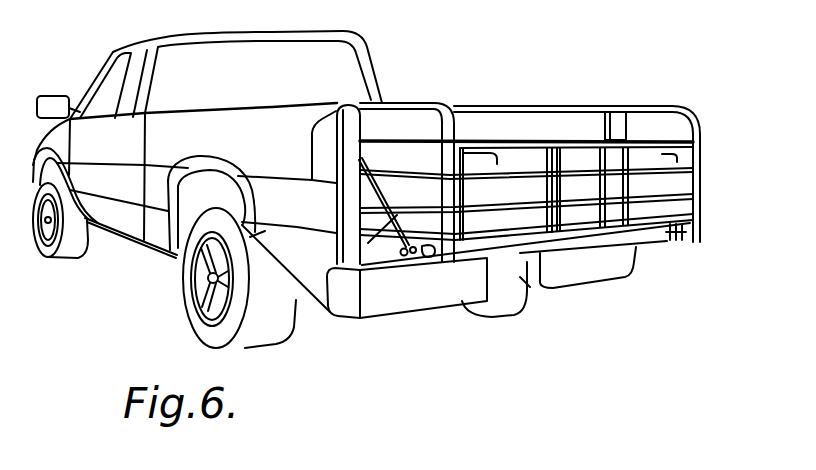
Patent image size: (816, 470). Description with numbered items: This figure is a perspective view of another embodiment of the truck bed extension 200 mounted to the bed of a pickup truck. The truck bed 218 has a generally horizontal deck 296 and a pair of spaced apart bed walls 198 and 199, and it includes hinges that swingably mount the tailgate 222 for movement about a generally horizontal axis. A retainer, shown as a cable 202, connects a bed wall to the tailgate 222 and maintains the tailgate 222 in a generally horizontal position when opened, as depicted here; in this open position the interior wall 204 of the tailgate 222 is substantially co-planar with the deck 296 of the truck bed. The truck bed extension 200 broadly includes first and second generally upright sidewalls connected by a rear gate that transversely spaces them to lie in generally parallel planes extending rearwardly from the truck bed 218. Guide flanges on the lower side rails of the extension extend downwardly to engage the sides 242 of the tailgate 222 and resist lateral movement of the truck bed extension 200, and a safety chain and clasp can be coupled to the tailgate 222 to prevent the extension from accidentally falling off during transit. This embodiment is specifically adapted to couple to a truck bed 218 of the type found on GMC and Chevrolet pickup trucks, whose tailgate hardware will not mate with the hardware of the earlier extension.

The bed wall 198 is at (238, 118).
The truck bed extension 200 is at (517, 163).
The bed wall 199 is at (575, 107).
The truck bed 218 is at (469, 129).
The interior wall 204 is at (700, 187).
The cable 202 is at (357, 237).
The deck 296 is at (418, 193).
The sides of the tailgate 242 is at (392, 250).
The tailgate 222 is at (652, 246).